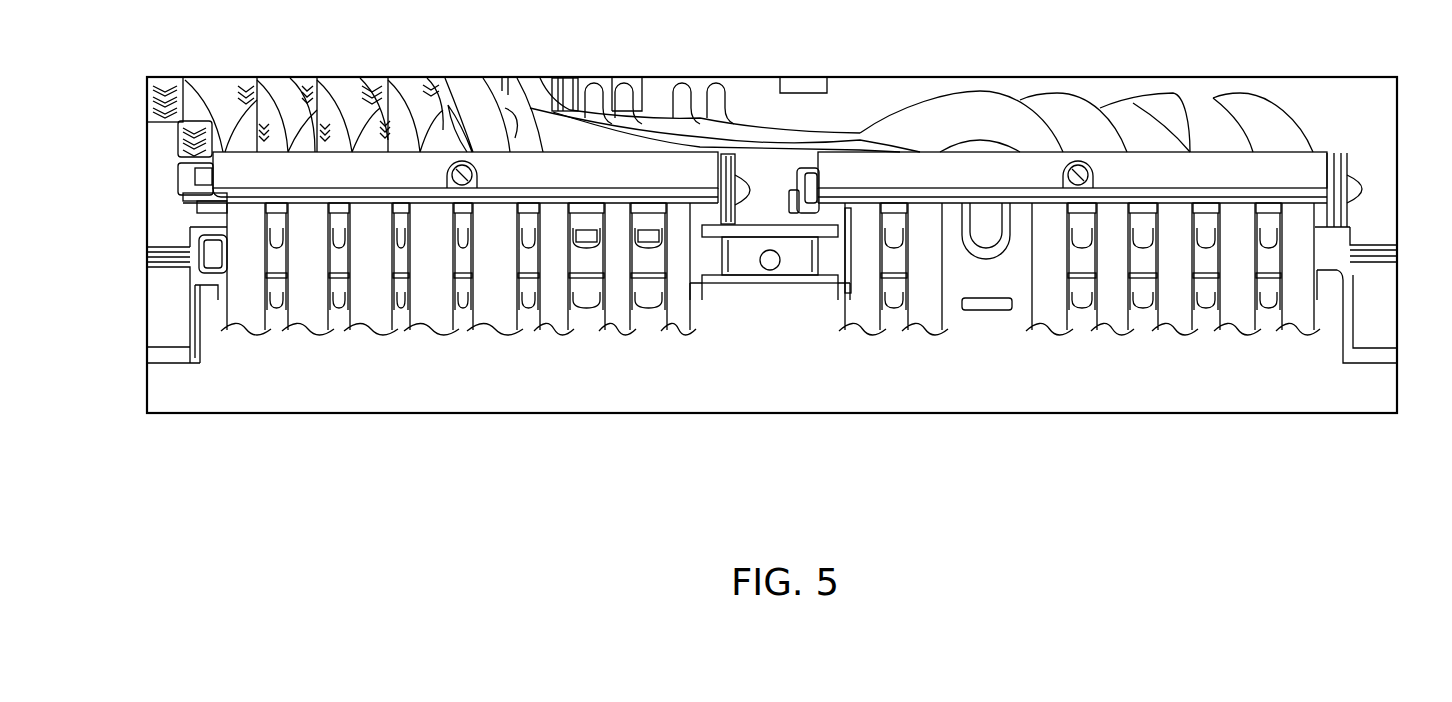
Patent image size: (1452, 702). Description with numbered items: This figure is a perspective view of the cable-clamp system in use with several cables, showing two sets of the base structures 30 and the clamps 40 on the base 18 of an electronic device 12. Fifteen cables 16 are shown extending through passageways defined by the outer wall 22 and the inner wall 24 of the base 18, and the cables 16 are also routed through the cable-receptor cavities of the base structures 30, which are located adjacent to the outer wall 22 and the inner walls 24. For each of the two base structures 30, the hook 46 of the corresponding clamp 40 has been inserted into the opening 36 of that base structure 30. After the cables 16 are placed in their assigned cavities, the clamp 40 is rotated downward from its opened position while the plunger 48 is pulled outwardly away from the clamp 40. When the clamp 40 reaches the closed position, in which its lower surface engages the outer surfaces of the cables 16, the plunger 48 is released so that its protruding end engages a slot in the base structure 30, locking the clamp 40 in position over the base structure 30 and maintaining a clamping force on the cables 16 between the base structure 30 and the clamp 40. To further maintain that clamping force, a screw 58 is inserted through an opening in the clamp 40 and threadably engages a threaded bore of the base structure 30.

The electronic device 12 is at (1408, 230).
The cables 16 is at (240, 317).
The base 18 is at (151, 436).
The outer wall 22 is at (213, 347).
The inner wall 24 is at (1262, 250).
The base structure 30 is at (188, 208).
The opening 36 is at (203, 152).
The clamp 40 is at (352, 177).
The hook 46 is at (173, 177).
The plunger 48 is at (753, 170).
The screw 58 is at (462, 164).